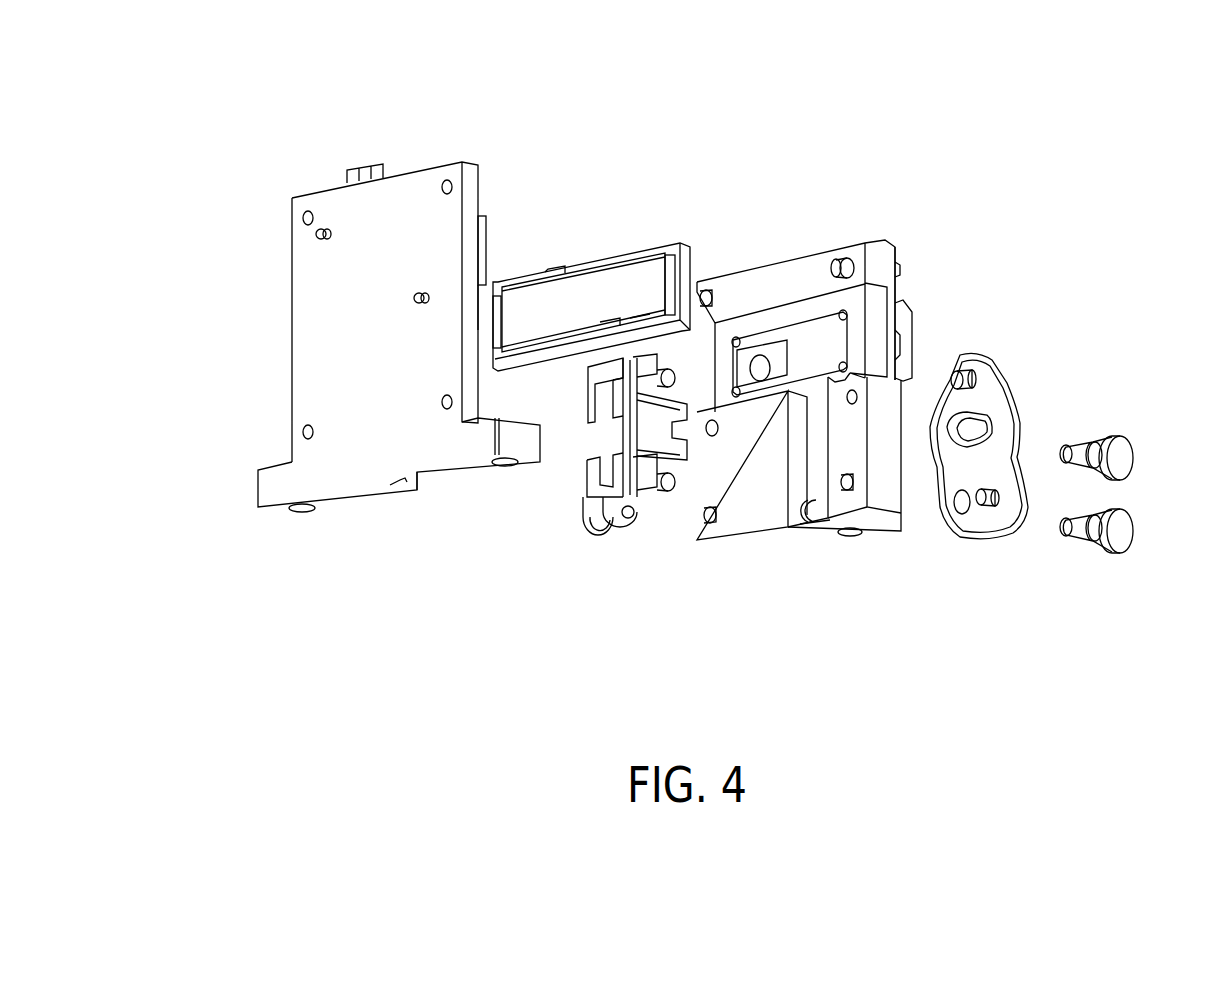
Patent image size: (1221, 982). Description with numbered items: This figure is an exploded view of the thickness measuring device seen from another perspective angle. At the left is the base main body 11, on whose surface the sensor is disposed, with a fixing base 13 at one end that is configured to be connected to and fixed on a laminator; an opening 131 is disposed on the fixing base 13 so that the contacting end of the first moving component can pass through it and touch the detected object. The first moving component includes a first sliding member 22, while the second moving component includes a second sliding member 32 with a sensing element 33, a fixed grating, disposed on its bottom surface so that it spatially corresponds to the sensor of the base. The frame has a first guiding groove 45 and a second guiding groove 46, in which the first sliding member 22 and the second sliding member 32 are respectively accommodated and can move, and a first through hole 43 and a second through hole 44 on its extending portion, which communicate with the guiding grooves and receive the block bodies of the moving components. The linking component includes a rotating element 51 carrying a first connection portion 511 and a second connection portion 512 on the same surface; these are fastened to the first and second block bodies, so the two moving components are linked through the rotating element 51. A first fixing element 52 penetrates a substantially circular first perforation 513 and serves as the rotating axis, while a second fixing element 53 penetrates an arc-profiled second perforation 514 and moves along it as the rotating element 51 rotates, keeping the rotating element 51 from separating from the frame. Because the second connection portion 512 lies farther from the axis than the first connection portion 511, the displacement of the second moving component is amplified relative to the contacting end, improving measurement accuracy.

The base main body 11 is at (333, 322).
The fixing base 13 is at (280, 483).
The opening 131 is at (457, 503).
The first sliding member 22 is at (592, 475).
The second sliding member 32 is at (680, 272).
The sensing element 33 is at (590, 292).
The first through hole 43 is at (808, 470).
The second through hole 44 is at (797, 342).
The first guiding groove 45 is at (814, 527).
The second guiding groove 46 is at (880, 326).
The rotating element 51 is at (995, 462).
The first connection portion 511 is at (993, 502).
The second connection portion 512 is at (965, 368).
The first perforation 513 is at (962, 502).
The second perforation 514 is at (978, 432).
The first fixing element 52 is at (1110, 537).
The second fixing element 53 is at (1112, 455).